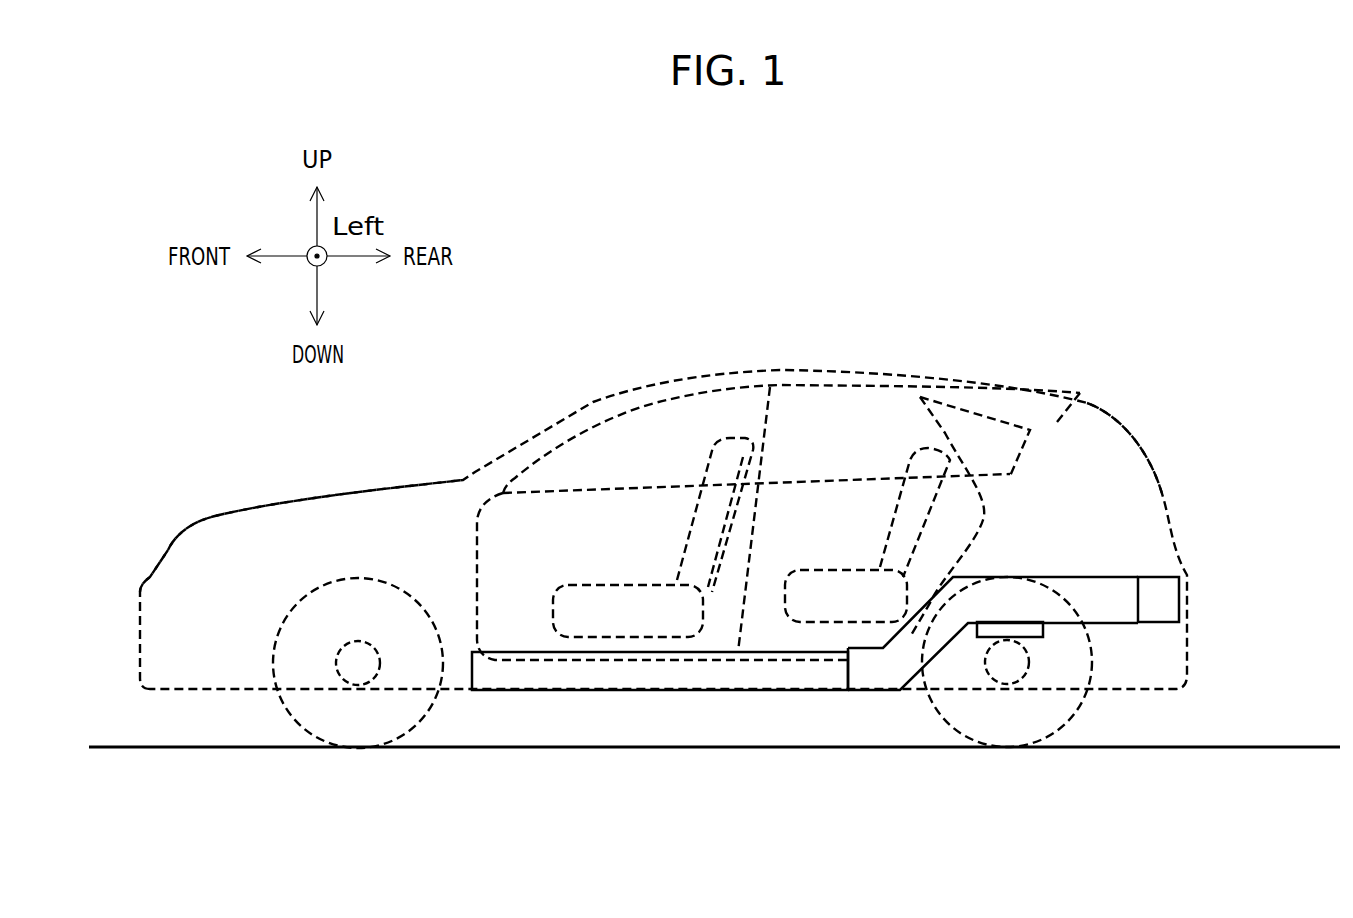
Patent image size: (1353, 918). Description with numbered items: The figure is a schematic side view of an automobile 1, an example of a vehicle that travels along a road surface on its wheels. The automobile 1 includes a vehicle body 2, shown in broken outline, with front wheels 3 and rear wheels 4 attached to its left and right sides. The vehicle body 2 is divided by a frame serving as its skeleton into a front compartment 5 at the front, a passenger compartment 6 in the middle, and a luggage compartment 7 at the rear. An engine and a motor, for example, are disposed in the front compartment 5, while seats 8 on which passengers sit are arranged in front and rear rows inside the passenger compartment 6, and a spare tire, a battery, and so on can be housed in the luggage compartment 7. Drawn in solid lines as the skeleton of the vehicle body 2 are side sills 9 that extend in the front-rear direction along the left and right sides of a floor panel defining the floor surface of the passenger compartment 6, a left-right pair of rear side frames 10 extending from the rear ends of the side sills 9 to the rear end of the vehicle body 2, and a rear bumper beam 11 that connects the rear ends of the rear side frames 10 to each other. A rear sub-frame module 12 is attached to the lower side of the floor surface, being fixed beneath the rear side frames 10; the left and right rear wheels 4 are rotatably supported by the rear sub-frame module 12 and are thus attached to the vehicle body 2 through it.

The automobile 1 is at (663, 455).
The vehicle body 2 is at (670, 330).
The front wheels 3 is at (397, 712).
The rear wheels 4 is at (955, 712).
The front compartment 5 is at (330, 520).
The passenger compartment 6 is at (713, 415).
The luggage compartment 7 is at (1087, 470).
The seats 8 is at (607, 590).
The side sills 9 is at (637, 690).
The rear side frames 10 is at (892, 673).
The rear bumper beam 11 is at (1163, 622).
The rear sub-frame module 12 is at (1022, 630).